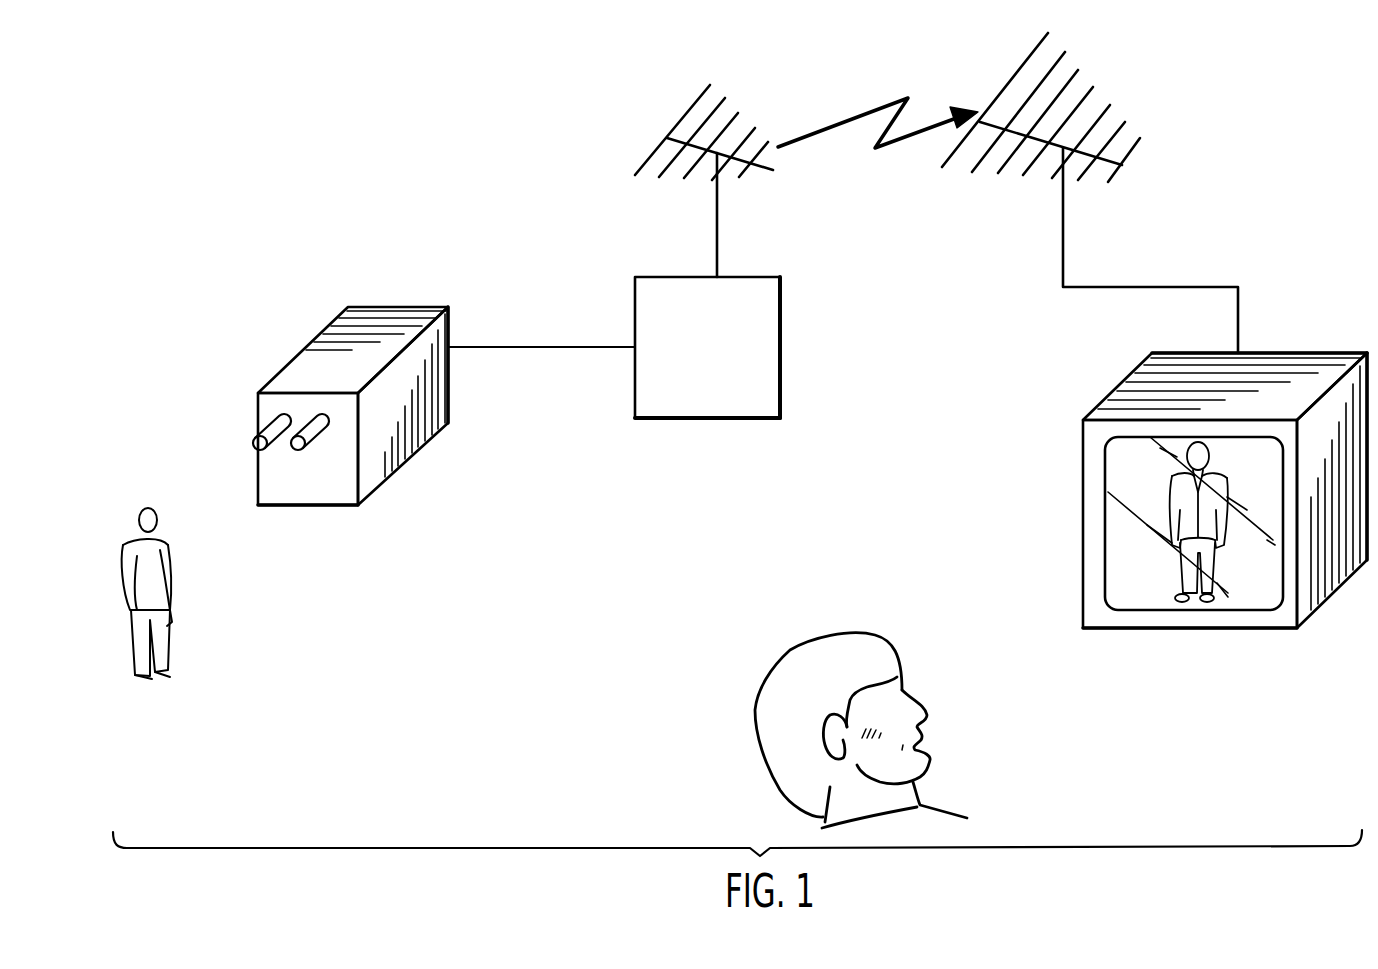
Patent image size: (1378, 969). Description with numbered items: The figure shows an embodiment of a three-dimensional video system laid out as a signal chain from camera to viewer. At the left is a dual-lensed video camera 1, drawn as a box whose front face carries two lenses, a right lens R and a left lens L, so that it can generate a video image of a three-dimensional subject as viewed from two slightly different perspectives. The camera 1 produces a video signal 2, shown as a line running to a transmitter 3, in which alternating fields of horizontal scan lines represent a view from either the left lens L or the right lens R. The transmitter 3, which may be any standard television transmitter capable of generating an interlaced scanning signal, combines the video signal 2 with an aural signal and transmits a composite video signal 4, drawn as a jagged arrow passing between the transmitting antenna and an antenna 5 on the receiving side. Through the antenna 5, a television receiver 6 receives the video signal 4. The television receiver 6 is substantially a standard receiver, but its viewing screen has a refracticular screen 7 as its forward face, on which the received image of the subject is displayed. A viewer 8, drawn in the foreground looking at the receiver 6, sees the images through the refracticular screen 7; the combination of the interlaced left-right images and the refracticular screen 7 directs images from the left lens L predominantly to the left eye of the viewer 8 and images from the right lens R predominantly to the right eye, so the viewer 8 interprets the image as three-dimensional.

The dual-lensed video camera 1 is at (327, 328).
The right lens R is at (253, 443).
The left lens L is at (300, 450).
The video signal 2 is at (541, 345).
The transmitter 3 is at (635, 290).
The composite video signal 4 is at (850, 118).
The antenna 5 is at (1133, 153).
The television receiver 6 is at (1115, 397).
The refracticular screen 7 is at (1136, 483).
The viewer 8 is at (767, 700).